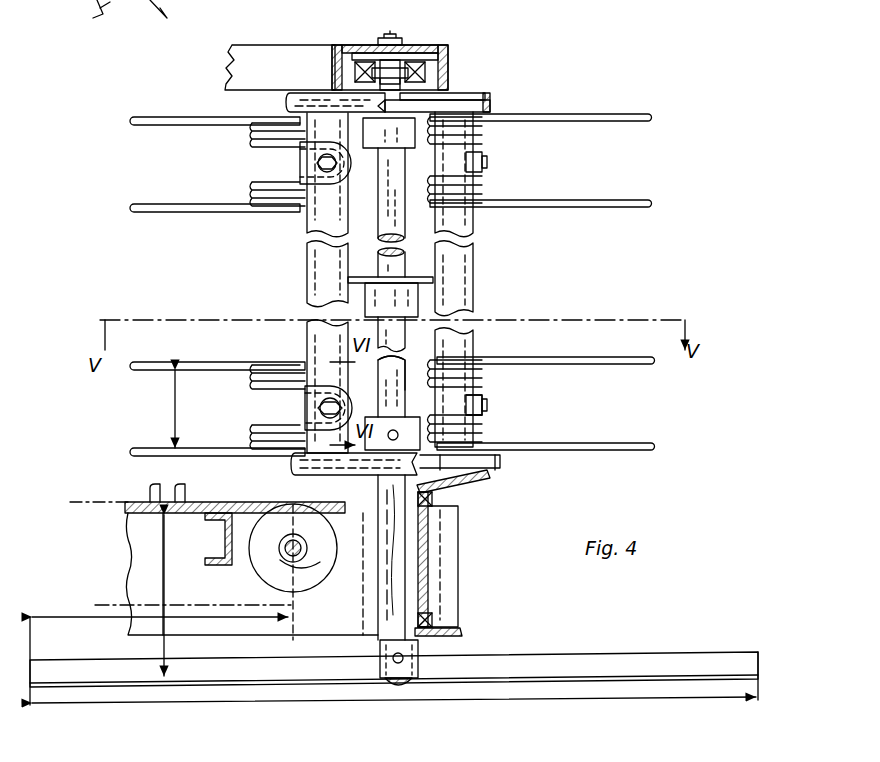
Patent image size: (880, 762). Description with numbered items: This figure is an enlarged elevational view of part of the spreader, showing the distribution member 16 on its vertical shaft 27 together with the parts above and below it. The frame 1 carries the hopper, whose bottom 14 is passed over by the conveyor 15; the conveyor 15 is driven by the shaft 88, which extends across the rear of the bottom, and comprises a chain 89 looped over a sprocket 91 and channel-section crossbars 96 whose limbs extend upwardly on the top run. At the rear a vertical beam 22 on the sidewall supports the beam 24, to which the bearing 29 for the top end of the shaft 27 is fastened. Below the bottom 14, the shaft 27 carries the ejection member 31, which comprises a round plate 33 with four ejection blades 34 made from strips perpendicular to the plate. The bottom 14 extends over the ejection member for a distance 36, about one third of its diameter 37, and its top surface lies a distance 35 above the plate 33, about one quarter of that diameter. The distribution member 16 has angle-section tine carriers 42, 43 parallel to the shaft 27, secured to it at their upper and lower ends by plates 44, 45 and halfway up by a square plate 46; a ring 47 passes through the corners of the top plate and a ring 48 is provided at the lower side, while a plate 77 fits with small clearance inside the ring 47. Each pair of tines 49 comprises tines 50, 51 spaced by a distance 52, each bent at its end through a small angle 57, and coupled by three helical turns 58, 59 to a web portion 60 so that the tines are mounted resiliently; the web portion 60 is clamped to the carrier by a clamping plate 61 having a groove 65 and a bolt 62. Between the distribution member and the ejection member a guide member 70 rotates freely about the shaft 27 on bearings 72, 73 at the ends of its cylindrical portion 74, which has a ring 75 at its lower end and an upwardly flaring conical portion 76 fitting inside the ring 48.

The frame 1 is at (125, 522).
The bottom 14 is at (190, 500).
The conveyor 15 is at (108, 602).
The distribution member 16 is at (618, 218).
The vertical beam 22 is at (475, 500).
The beam 24 is at (418, 45).
The shaft 27 is at (378, 210).
The bearing 29 is at (426, 72).
The ejection member 31 is at (665, 648).
The round plate 33 is at (590, 672).
The ejection blade 34 is at (535, 650).
The distance 35 is at (128, 556).
The distance 36 is at (105, 620).
The diameter 37 is at (458, 702).
The tine carrier 42 is at (473, 256).
The tine carrier 43 is at (307, 225).
The plate 44 is at (322, 96).
The plate 45 is at (292, 466).
The square plate 46 is at (348, 280).
The ring 47 is at (492, 102).
The ring 48 is at (505, 465).
The pair of tines 49 is at (152, 92).
The tine 50 is at (165, 125).
The tine 51 is at (145, 185).
The distance 52 is at (175, 405).
The angle 57 is at (130, 17).
The helical turns 58 is at (255, 130).
The helical turns 59 is at (252, 185).
The web portion 60 is at (366, 395).
The clamping plate 61 is at (324, 404).
The bolt 62 is at (300, 158).
The groove 65 is at (485, 425).
The guide member 70 is at (445, 580).
The bearing 72 is at (432, 502).
The bearing 73 is at (440, 615).
The cylindrical portion 74 is at (430, 540).
The ring 75 is at (460, 634).
The conical portion 76 is at (470, 482).
The plate 77 is at (460, 96).
The shaft 88 is at (275, 565).
The chain 89 is at (92, 502).
The sprocket 91 is at (320, 580).
The crossbar 96 is at (150, 490).